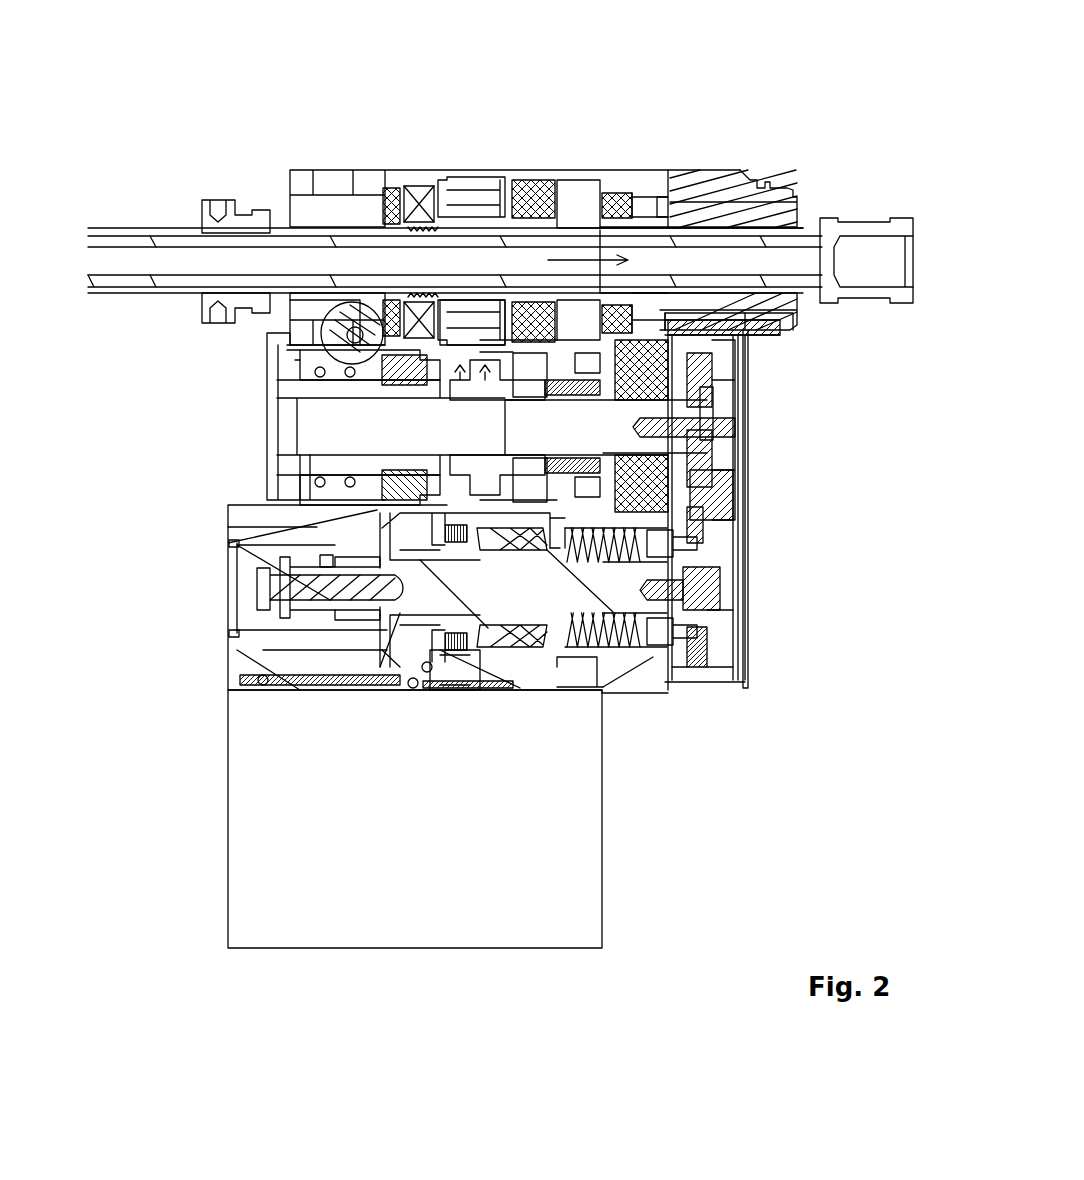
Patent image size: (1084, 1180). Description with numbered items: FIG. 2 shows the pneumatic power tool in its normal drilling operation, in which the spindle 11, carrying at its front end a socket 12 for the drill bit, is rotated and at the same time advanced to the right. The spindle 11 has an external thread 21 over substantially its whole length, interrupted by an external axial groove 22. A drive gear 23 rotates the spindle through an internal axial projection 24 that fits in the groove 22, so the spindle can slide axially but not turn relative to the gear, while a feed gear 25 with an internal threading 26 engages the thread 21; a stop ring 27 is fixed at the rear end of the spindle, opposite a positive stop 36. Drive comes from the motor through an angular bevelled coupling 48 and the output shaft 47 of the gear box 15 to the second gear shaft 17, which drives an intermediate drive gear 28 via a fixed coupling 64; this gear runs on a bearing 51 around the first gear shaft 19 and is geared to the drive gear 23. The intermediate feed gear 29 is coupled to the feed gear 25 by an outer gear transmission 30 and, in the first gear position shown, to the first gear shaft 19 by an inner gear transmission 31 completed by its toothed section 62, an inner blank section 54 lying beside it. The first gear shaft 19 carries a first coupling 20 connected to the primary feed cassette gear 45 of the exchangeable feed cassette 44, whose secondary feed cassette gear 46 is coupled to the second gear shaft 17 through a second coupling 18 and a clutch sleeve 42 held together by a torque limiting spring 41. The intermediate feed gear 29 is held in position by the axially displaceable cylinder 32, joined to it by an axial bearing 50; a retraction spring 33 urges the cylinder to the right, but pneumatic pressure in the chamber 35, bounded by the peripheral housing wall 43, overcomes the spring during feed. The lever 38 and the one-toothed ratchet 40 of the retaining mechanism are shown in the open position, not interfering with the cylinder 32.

The spindle 11 is at (147, 240).
The socket 12 is at (900, 230).
The gear box 15 is at (228, 845).
The second gear shaft 17 is at (536, 602).
The second coupling 18 is at (680, 614).
The first gear shaft 19 is at (745, 335).
The first coupling 20 is at (720, 392).
The external thread 21 is at (368, 280).
The external axial groove 22 is at (708, 218).
The drive gear 23 is at (577, 195).
The internal axial projection 24 is at (617, 208).
The feed gear 25 is at (480, 193).
The internal threading 26 is at (422, 220).
The stop ring 27 is at (262, 212).
The intermediate drive gear 28 is at (560, 375).
The intermediate feed gear 29 is at (470, 375).
The outer gear transmission 30 is at (445, 342).
The inner gear transmission 31 is at (463, 395).
The cylinder 32 is at (310, 400).
The retraction spring 33 is at (290, 478).
The chamber 35 is at (445, 508).
The positive stop 36 is at (357, 213).
The lever 38 is at (325, 320).
The one-toothed ratchet 40 is at (300, 360).
The torque limiting spring 41 is at (605, 545).
The clutch sleeve 42 is at (733, 565).
The peripheral housing wall 43 is at (350, 507).
The feed cassette 44 is at (752, 440).
The primary feed cassette gear 45 is at (735, 490).
The secondary feed cassette gear 46 is at (735, 520).
The output shaft 47 is at (195, 685).
The angular bevelled coupling 48 is at (450, 690).
The axial bearing 50 is at (380, 507).
The bearing 51 is at (590, 472).
The inner blank section 54 is at (538, 425).
The toothed section 62 is at (505, 378).
The fixed coupling 64 is at (575, 650).